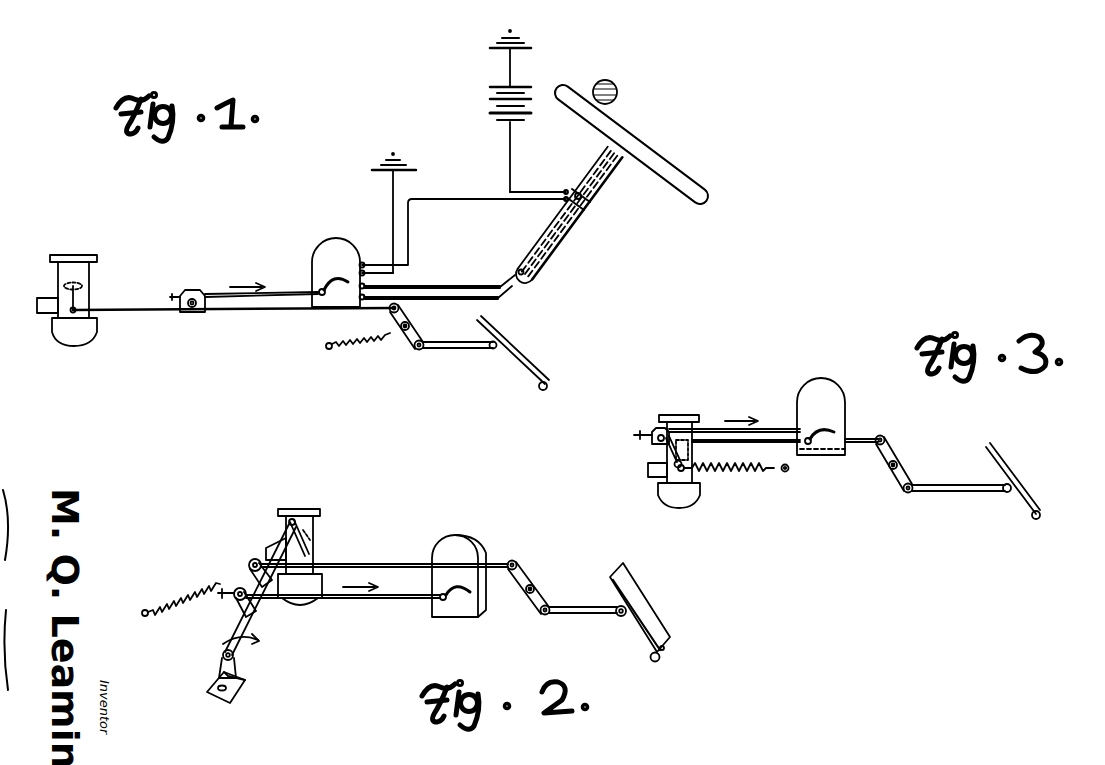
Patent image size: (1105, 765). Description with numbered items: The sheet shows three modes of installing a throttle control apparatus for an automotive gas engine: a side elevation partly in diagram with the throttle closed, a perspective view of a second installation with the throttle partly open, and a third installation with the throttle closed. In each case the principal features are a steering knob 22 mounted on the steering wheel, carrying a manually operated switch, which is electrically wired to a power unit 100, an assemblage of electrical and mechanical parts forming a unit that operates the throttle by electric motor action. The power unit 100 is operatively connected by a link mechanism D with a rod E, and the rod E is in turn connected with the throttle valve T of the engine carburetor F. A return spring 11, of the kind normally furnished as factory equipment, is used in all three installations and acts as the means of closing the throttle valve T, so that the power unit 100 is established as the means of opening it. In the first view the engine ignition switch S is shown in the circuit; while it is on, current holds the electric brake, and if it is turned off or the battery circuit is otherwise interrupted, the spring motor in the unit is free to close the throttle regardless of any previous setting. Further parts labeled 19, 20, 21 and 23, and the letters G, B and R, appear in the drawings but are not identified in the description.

In FIG. 1, the power unit 100 is at (333, 248).
In FIG. 3, the power unit 100 is at (812, 398).
In FIG. 2, the power unit 100 is at (452, 545).
In FIG. 1, the return spring 11 is at (358, 334).
In FIG. 3, the return spring 11 is at (745, 474).
In FIG. 2, the return spring 11 is at (178, 600).
In FIG. 1, the control rod 19 is at (430, 282).
In FIG. 1, the control rod 20 is at (468, 293).
In FIG. 1, the pedal linkage 21 is at (435, 300).
In FIG. 3, the pedal linkage 21 is at (942, 478).
In FIG. 2, the pedal linkage 21 is at (589, 611).
In FIG. 1, the steering knob 22 is at (614, 98).
In FIG. 2, the steering knob 22 is at (245, 578).
In FIG. 3, the pulley bracket 23 is at (656, 441).
In FIG. 1, the engine carburetor F is at (88, 272).
In FIG. 3, the engine carburetor F is at (696, 450).
In FIG. 2, the engine carburetor F is at (314, 524).
In FIG. 1, the throttle valve T is at (66, 284).
In FIG. 3, the throttle valve T is at (660, 476).
In FIG. 2, the throttle valve T is at (286, 522).
In FIG. 1, the rod E is at (130, 318).
In FIG. 1, the link mechanism D is at (286, 290).
In FIG. 3, the link mechanism D is at (770, 432).
In FIG. 2, the link mechanism D is at (352, 600).
In FIG. 1, the ground G is at (385, 162).
In FIG. 1, the battery B is at (490, 106).
In FIG. 1, the engine ignition switch S is at (575, 185).
In FIG. 2, the lever R is at (243, 605).